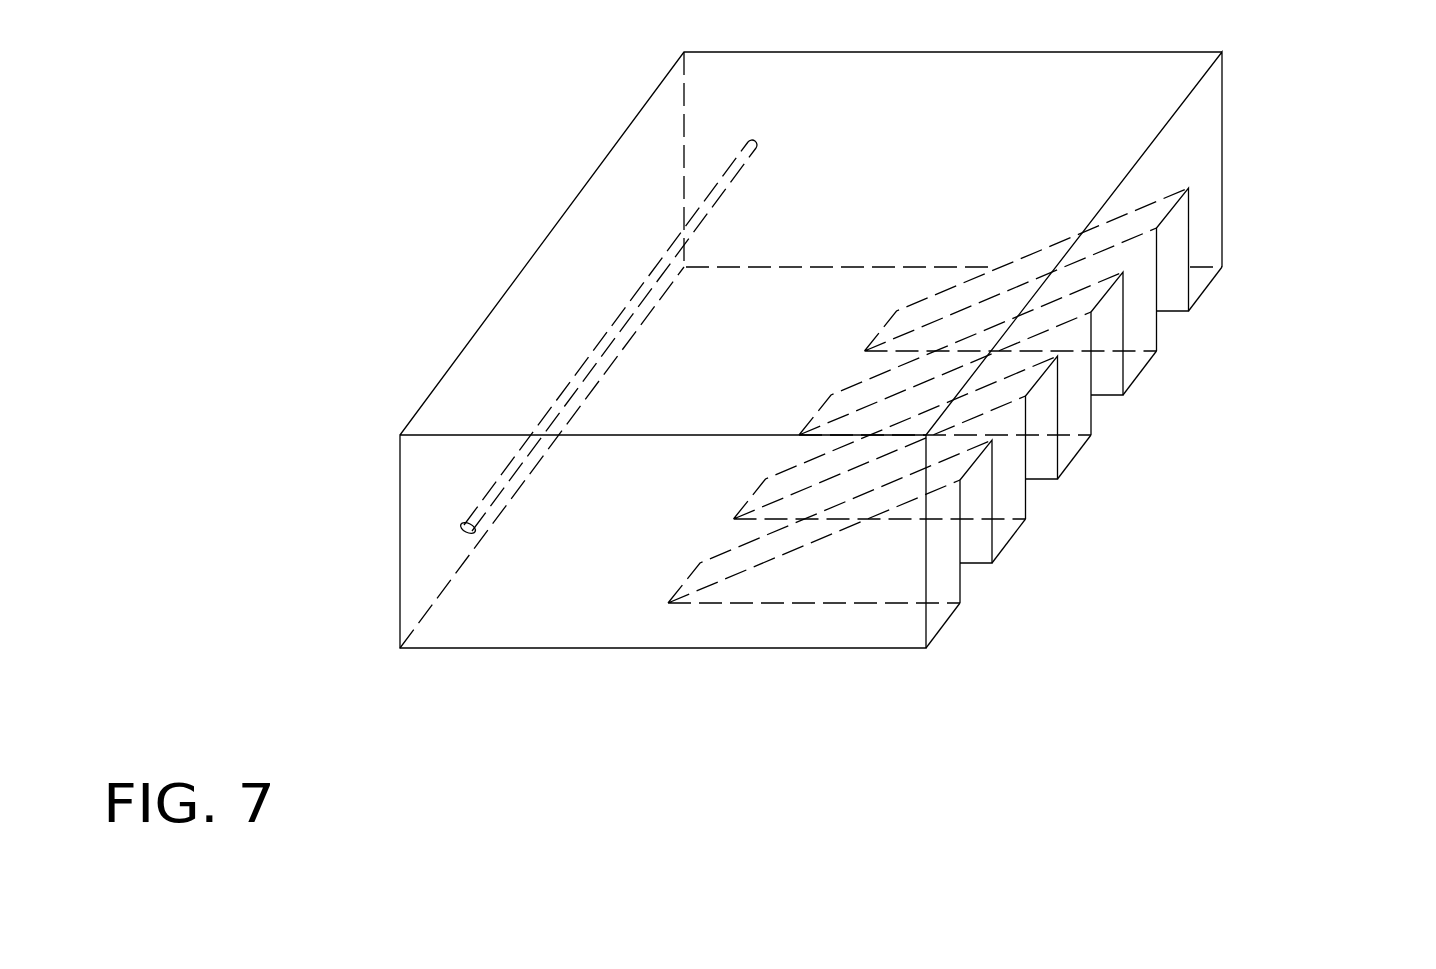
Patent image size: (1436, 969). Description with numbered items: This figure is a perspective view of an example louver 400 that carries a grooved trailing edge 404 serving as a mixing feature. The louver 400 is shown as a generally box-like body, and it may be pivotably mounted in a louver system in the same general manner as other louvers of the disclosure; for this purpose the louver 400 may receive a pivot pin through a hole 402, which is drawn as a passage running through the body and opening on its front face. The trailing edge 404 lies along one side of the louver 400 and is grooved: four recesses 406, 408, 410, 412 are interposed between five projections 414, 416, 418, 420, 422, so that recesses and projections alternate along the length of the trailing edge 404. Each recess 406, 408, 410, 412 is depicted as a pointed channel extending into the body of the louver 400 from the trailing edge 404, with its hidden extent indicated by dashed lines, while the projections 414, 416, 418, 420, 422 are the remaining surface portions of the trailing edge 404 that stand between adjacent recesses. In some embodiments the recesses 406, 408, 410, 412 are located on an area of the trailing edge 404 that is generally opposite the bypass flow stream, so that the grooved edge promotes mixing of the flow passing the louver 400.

The louver 400 is at (472, 168).
The hole 402 is at (460, 525).
The trailing edge 404 is at (1237, 135).
The recess 406 is at (980, 582).
The recess 408 is at (1044, 498).
The recess 410 is at (1110, 415).
The recess 412 is at (1175, 330).
The projection 414 is at (945, 627).
The projection 416 is at (1010, 541).
The projection 418 is at (1075, 457).
The projection 420 is at (1140, 372).
The projection 422 is at (1207, 289).